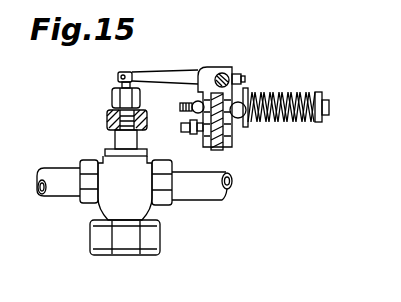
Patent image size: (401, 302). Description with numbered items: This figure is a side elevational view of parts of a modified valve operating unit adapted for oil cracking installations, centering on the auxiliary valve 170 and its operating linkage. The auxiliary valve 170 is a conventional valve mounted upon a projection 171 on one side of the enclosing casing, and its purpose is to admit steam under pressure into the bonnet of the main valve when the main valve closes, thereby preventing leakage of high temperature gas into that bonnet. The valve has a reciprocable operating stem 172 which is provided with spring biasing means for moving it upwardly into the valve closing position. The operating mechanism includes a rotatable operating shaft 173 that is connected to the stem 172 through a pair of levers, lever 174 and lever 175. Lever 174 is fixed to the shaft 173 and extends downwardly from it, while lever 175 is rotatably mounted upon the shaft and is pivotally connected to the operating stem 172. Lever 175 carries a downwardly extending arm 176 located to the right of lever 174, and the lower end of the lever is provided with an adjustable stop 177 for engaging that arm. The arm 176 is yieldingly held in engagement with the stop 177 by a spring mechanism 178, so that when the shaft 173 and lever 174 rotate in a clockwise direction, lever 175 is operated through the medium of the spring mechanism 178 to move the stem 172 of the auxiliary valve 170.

The auxiliary valve 170 is at (134, 202).
The projection 171 is at (107, 118).
The operating stem 172 is at (124, 71).
The operating shaft 173 is at (222, 70).
The lever 174 is at (213, 142).
The lever 175 is at (168, 70).
The arm 176 is at (224, 139).
The adjustable stop 177 is at (190, 135).
The spring mechanism 178 is at (282, 92).